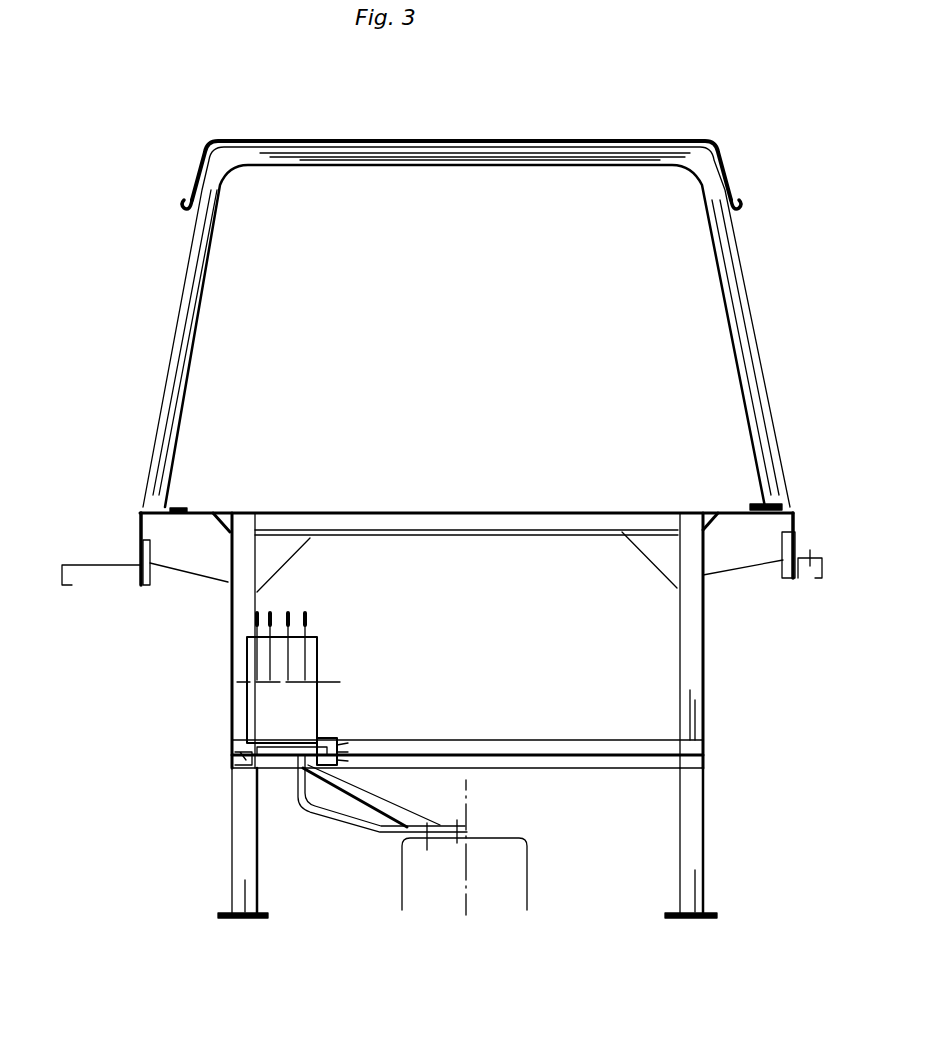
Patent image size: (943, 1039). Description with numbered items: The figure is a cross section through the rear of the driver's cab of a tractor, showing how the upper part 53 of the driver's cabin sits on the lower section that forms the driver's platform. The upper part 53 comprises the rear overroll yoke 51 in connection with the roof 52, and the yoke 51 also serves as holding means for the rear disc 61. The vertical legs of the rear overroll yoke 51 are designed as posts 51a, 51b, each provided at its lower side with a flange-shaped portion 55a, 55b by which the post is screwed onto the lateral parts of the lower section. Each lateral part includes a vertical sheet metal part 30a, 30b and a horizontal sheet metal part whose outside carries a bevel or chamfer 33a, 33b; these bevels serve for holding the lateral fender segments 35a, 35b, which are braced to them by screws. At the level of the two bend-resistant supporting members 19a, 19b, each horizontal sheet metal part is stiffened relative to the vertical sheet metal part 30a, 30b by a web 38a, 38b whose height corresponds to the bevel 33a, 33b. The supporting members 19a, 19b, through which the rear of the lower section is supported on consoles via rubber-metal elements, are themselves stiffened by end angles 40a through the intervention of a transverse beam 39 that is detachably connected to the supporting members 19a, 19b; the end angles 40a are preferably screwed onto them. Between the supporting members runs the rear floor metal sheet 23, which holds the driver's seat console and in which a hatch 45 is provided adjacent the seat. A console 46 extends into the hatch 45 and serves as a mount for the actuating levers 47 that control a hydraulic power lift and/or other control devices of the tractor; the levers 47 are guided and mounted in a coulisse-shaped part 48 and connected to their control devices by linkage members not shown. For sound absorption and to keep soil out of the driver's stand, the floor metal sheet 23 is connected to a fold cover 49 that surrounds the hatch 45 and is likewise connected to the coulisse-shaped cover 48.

The upper part of the driver's cabin 53 is at (388, 128).
The roof 52 is at (212, 138).
The rear overroll yoke 51 is at (447, 162).
The post 51a is at (746, 357).
The post 51b is at (178, 362).
The rear disc 61 is at (426, 319).
The flange-shaped portion 55a is at (768, 500).
The flange-shaped portion 55b is at (187, 507).
The transverse beam 39 is at (432, 520).
The web 38a is at (733, 558).
The web 38b is at (185, 572).
The bevel or chamfer 33a is at (790, 545).
The bevel or chamfer 33b is at (140, 546).
The lateral fender segment 35a is at (812, 580).
The lateral fender segment 35b is at (78, 575).
The vertical sheet metal part 30a is at (703, 655).
The vertical sheet metal part 30b is at (232, 683).
The end angle 40a is at (265, 563).
The rear floor metal sheet 23 is at (470, 745).
The actuating levers 47 is at (308, 618).
The coulisse-shaped part 48 is at (318, 672).
The console 46 is at (325, 706).
The hatch 45 is at (342, 752).
The fold cover 49 is at (238, 755).
The bend-resistant supporting member 19a is at (697, 832).
The bend-resistant supporting member 19b is at (240, 843).